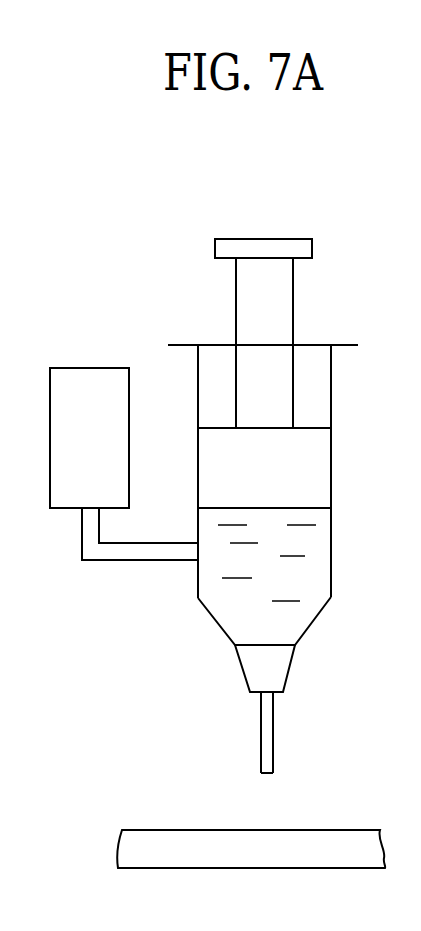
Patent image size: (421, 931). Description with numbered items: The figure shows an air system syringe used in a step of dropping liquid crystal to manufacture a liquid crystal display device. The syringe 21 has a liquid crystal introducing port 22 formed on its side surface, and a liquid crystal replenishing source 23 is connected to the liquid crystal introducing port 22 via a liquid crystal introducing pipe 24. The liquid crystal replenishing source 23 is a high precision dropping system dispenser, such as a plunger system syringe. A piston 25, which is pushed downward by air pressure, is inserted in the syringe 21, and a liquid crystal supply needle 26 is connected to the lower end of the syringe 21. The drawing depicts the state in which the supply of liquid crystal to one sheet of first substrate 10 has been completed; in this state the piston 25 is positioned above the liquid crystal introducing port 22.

The syringe 21 is at (279, 506).
The liquid crystal introducing port 22 is at (198, 550).
The liquid crystal replenishing source 23 is at (88, 368).
The liquid crystal introducing pipe 24 is at (137, 560).
The piston 25 is at (315, 467).
The liquid crystal supply needle 26 is at (268, 735).
The first substrate 10 is at (175, 838).